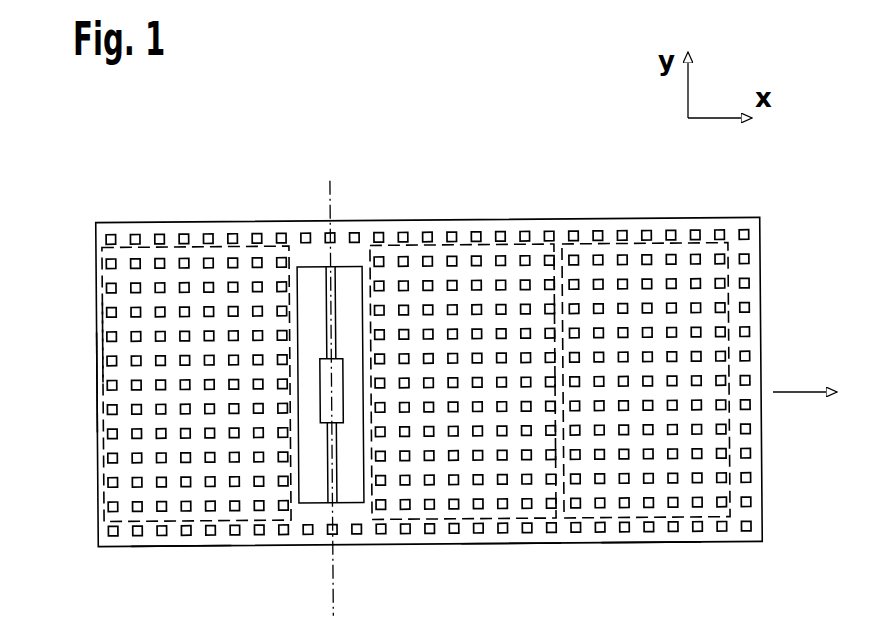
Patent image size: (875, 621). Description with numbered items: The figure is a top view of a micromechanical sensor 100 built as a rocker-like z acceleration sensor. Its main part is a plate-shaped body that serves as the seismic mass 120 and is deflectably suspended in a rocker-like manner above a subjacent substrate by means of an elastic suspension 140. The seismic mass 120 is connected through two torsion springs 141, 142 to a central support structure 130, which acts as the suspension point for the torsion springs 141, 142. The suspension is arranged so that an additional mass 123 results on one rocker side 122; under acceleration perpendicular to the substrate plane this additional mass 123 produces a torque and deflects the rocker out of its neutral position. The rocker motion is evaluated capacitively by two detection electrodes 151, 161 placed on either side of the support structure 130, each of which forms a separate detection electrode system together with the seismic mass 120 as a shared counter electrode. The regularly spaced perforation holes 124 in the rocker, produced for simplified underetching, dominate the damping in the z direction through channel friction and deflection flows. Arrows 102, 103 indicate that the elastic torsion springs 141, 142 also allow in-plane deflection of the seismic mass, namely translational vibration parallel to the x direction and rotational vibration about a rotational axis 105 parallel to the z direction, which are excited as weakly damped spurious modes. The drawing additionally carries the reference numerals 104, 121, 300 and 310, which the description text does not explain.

The micromechanical sensor 100 is at (776, 477).
The arrow 102 is at (730, 150).
The arrow 103 is at (808, 394).
The axis of symmetry 104 is at (333, 188).
The rotational axis 105 is at (332, 390).
The seismic mass 120 is at (97, 488).
The first edge 121 is at (174, 550).
The rocker side 122 is at (511, 548).
The additional mass 123 is at (653, 548).
The perforation holes 124 is at (623, 231).
The central support structure 130 is at (346, 414).
The elastic suspension 140 is at (348, 504).
The torsion spring 141 is at (327, 288).
The torsion spring 142 is at (330, 475).
The detection electrode 151 is at (173, 247).
The detection electrode 161 is at (483, 246).
The bond frame 300 is at (91, 382).
The bond frame edge 310 is at (97, 338).